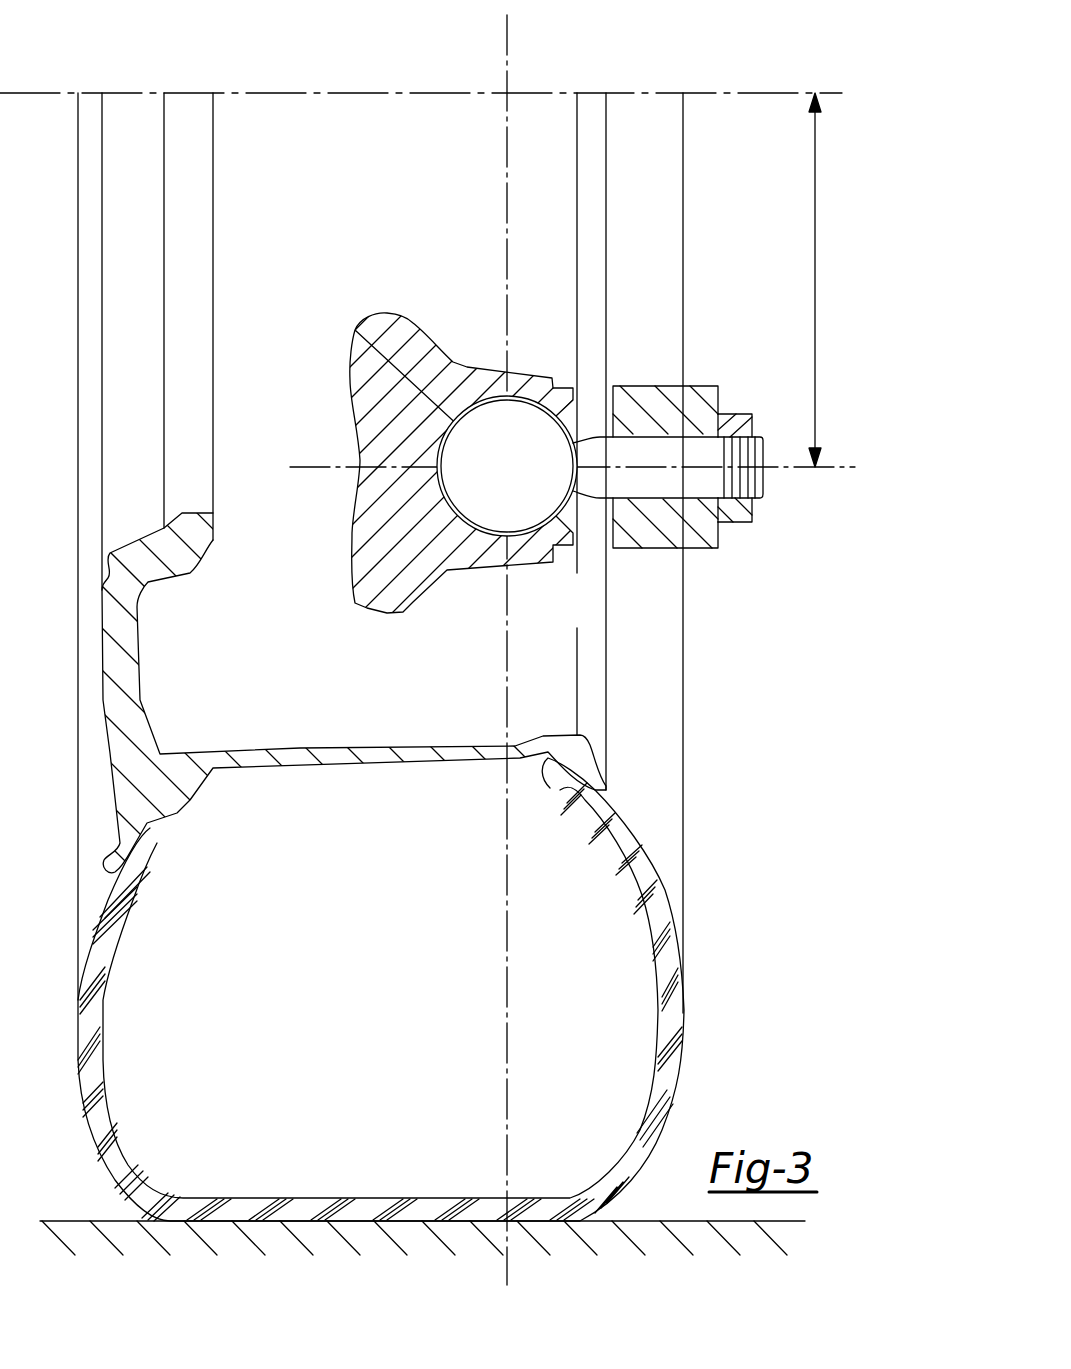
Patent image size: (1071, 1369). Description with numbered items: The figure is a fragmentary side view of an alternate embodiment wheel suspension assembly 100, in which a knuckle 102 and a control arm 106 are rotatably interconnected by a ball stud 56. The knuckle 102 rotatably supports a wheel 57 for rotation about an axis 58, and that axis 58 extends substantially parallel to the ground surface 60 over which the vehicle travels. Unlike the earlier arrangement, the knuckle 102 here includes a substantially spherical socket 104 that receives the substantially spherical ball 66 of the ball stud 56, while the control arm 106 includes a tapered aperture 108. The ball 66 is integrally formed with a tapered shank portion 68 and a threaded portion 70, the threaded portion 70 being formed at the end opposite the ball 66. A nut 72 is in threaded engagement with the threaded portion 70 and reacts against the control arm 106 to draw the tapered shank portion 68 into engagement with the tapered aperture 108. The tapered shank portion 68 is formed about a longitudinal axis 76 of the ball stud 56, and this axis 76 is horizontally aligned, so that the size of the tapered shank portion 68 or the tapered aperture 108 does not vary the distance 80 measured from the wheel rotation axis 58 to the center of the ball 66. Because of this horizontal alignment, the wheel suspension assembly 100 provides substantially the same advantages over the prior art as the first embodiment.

The ball stud 56 is at (588, 535).
The wheel 57 is at (360, 750).
The axis 58 is at (727, 93).
The ground surface 60 is at (63, 1221).
The ball 66 is at (520, 412).
The tapered shank portion 68 is at (645, 495).
The threaded portion 70 is at (765, 484).
The nut 72 is at (752, 420).
The longitudinal axis 76 is at (645, 467).
The distance 80 is at (815, 278).
The wheel suspension assembly 100 is at (403, 243).
The knuckle 102 is at (423, 566).
The socket 104 is at (482, 396).
The control arm 106 is at (718, 535).
The tapered aperture 108 is at (700, 445).